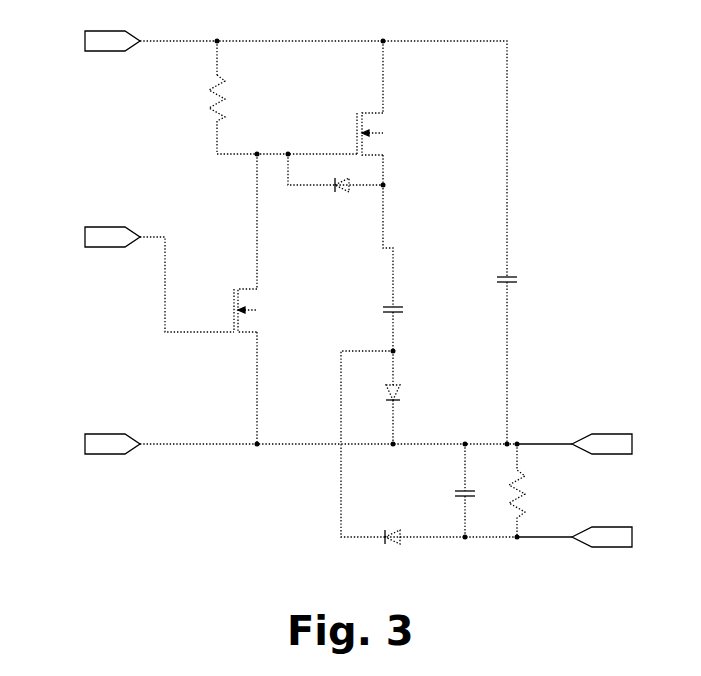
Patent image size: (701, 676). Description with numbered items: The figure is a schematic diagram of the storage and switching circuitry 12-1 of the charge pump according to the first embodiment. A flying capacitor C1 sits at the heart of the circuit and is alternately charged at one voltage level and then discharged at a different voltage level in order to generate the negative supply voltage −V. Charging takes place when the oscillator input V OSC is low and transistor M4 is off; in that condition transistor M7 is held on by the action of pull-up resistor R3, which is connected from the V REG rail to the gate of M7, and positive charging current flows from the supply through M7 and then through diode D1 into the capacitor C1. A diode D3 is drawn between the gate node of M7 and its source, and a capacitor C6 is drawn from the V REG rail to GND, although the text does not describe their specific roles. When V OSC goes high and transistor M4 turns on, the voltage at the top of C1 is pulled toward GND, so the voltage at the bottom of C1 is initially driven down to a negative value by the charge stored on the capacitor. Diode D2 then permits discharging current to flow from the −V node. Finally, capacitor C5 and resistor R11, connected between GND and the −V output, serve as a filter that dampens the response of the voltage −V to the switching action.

The storage and switching circuitry 12-1 is at (331, 299).
The pull-up resistor R3 is at (233, 98).
The transistor M4 is at (292, 310).
The transistor M7 is at (416, 136).
The diode D3 is at (339, 189).
The flying capacitor C1 is at (418, 313).
The capacitor C6 is at (527, 281).
The diode D1 is at (423, 397).
The capacitor C5 is at (481, 501).
The resistor R11 is at (532, 490).
The diode D2 is at (392, 539).